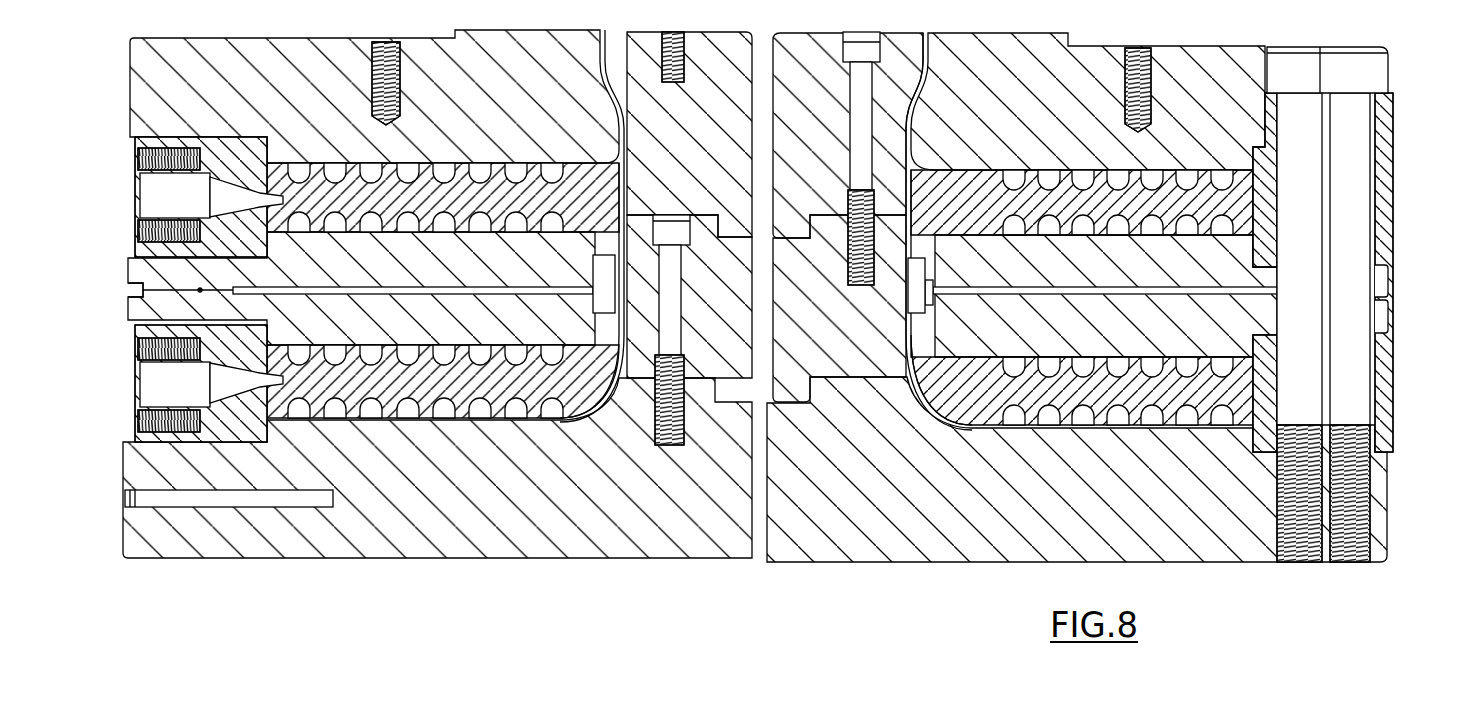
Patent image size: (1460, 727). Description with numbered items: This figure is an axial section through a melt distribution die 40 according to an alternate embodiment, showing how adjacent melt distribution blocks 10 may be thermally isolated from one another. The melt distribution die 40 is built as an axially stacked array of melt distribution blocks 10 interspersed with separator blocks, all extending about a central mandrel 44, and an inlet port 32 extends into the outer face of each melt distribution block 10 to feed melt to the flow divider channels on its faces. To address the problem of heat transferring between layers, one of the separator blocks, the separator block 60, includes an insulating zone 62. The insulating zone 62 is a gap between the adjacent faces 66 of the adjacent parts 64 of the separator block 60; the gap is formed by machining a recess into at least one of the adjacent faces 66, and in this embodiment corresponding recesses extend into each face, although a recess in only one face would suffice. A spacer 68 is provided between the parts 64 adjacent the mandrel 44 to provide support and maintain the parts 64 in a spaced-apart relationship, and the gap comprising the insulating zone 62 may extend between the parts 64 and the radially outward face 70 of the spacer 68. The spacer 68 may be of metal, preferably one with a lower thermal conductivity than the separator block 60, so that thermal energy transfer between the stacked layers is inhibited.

The melt distribution block 10 is at (1396, 207).
The inlet port 32 is at (134, 190).
The melt distribution die 40 is at (523, 575).
The central mandrel 44 is at (800, 47).
The separator block 60 is at (1393, 265).
The insulating zone 62 is at (422, 297).
The parts of the separator block 64 is at (131, 268).
The adjacent faces 66 is at (1108, 320).
The spacer 68 is at (916, 297).
The radially outward face 70 is at (592, 280).